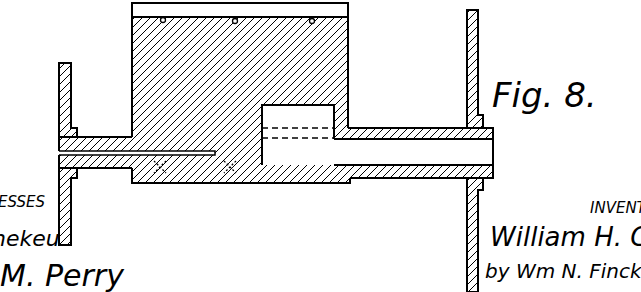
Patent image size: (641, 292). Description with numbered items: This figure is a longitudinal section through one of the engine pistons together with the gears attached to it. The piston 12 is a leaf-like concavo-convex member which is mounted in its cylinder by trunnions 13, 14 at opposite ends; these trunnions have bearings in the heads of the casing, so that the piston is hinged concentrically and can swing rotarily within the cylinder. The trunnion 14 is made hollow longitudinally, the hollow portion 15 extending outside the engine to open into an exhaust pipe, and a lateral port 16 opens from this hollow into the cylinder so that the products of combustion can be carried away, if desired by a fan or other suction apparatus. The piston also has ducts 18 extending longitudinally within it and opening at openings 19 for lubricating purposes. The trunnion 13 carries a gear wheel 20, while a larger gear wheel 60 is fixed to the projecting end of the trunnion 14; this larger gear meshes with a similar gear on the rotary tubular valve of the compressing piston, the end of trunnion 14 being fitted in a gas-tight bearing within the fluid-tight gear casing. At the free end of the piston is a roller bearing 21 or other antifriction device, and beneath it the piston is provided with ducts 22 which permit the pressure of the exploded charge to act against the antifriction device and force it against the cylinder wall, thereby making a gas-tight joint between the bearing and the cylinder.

The piston 12 is at (328, 60).
The trunnion 13 is at (100, 137).
The trunnion 14 is at (425, 172).
The hollow portion 15 is at (370, 160).
The lateral port 16 is at (320, 115).
The ducts 18 is at (120, 151).
The duct openings 19 is at (170, 176).
The gear wheel 20 is at (59, 110).
The roller bearing 21 is at (132, 11).
The ducts 22 is at (160, 21).
The gear wheel 60 is at (467, 66).